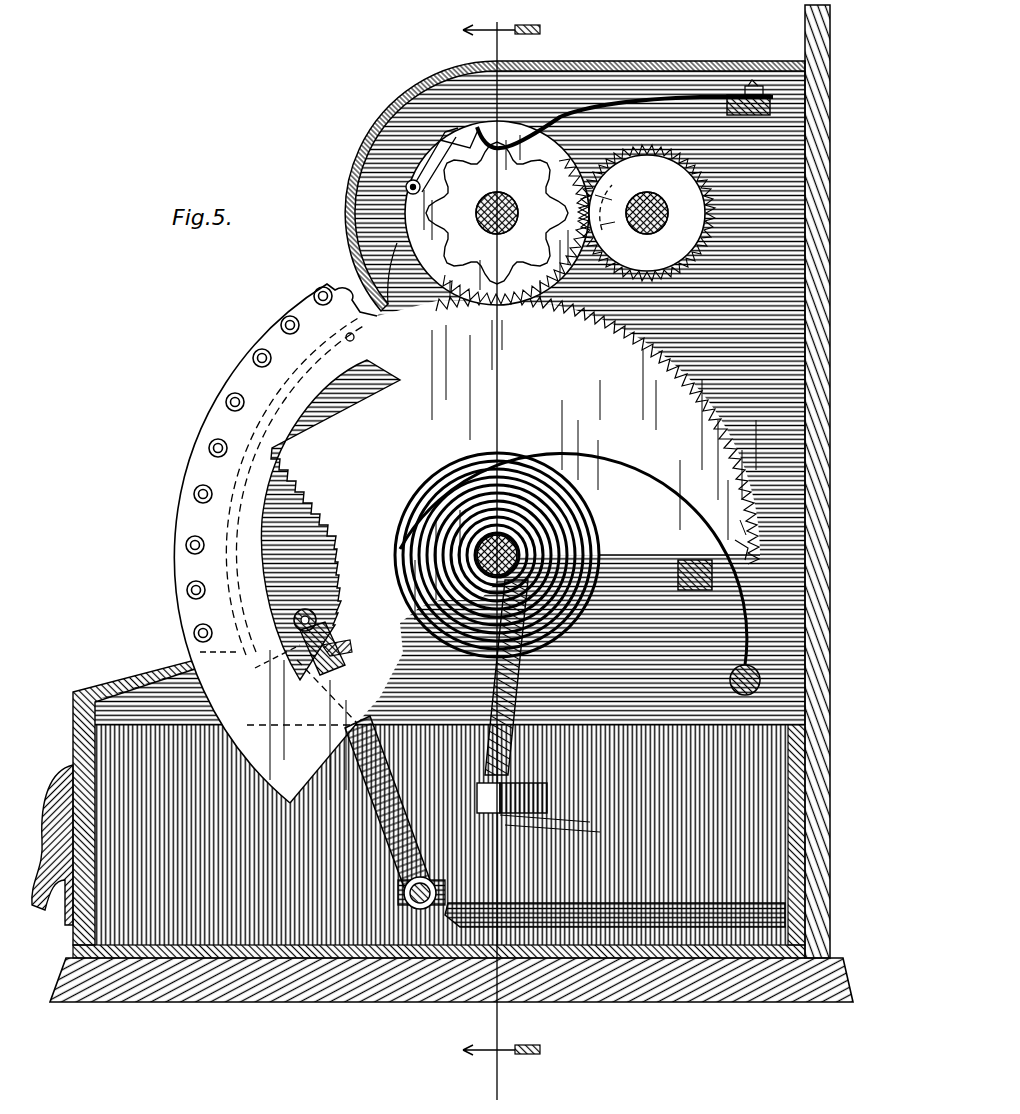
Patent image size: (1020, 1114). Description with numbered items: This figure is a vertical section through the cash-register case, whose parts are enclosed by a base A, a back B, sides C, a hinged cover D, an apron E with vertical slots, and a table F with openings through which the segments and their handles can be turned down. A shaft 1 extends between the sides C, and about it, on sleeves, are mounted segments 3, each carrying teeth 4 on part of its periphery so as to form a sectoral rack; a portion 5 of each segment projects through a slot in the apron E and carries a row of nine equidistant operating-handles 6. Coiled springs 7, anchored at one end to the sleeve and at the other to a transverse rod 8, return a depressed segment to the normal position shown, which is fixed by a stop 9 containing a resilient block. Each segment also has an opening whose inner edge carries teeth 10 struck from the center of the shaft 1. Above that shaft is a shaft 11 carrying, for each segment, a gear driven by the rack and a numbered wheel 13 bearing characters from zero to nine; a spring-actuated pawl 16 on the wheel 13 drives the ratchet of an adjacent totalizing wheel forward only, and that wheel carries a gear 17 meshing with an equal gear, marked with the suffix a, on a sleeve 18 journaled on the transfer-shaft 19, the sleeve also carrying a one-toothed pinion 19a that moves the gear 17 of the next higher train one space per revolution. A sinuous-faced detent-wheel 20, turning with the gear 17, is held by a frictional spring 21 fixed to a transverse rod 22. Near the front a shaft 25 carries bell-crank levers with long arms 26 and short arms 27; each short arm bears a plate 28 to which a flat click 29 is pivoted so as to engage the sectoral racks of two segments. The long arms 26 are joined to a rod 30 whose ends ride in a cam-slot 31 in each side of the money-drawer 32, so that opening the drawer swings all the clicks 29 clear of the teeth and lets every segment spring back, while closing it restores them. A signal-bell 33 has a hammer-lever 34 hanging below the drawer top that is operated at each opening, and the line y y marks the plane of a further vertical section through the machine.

The shaft 1 is at (568, 518).
The segment 3 is at (515, 560).
The teeth 4 is at (597, 428).
The projecting portion of segment 5 is at (245, 375).
The operating-handles 6 is at (290, 336).
The coiled springs 7 is at (545, 452).
The transverse rod 8 is at (760, 677).
The stop 9 is at (680, 562).
The teeth 10 is at (358, 455).
The shaft 11 is at (485, 228).
The wheel 13 is at (440, 140).
The spring-actuated pawl 16 is at (446, 161).
The gear 17 is at (397, 243).
The sleeve 18 is at (662, 204).
The transverse shaft 19 is at (647, 236).
The one-toothed pinion 19a is at (627, 191).
The sinuous-faced detent-wheel 20 is at (497, 213).
The frictional spring 21 is at (598, 100).
The transverse rod 22 is at (758, 86).
The shaft 25 is at (294, 621).
The long arm 26 is at (387, 803).
The short arm 27 is at (302, 676).
The plate 28 is at (336, 648).
The flat click 29 is at (345, 661).
The rod 30 is at (412, 910).
The cam-slot 31 is at (640, 925).
The money-drawer 32 is at (95, 915).
The signal-bell 33 is at (538, 807).
The hammer-lever 34 is at (505, 681).
The base A is at (752, 1000).
The back B is at (808, 10).
The sides C is at (450, 508).
The cover D is at (368, 143).
The apron E is at (282, 486).
The table F is at (110, 690).
The suffix designator a is at (216, 1015).
The section line y y is at (501, 557).